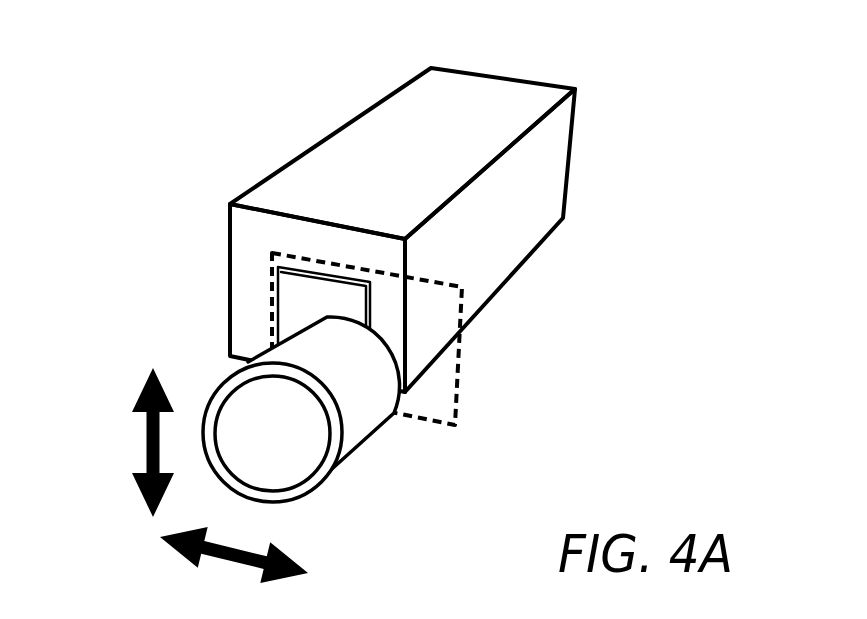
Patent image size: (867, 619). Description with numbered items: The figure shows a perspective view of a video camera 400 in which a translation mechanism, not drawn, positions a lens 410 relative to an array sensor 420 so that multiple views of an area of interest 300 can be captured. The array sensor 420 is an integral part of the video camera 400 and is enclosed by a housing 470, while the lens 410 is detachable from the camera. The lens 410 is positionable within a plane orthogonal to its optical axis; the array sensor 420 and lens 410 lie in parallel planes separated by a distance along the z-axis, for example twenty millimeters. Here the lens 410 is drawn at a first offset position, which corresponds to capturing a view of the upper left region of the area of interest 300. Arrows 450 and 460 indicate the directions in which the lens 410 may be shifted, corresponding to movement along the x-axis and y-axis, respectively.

The video camera 400 is at (666, 74).
The housing 470 is at (548, 180).
The array sensor 420 is at (298, 293).
The area of interest 300 is at (458, 372).
The lens 410 is at (248, 410).
The arrow 450 is at (148, 448).
The arrow 460 is at (227, 557).